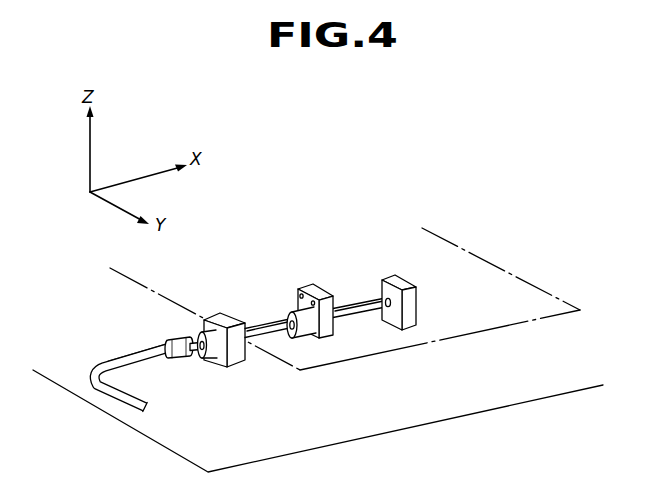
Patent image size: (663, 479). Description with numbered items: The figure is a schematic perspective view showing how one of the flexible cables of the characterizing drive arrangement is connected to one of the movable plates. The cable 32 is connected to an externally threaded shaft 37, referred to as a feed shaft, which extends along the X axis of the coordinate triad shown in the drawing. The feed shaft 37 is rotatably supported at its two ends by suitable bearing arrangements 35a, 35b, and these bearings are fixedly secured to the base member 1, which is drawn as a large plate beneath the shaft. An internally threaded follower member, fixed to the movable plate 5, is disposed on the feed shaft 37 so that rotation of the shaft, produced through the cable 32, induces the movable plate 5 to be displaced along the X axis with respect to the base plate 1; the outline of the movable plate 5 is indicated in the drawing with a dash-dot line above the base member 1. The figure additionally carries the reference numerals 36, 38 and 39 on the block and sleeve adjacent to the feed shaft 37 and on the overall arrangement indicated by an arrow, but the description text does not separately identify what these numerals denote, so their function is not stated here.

The base member 1 is at (448, 402).
The movable plate 5 is at (515, 317).
The flexible cable 32 is at (88, 378).
The bearing arrangement 35a is at (220, 365).
The bearing arrangement 35b is at (413, 310).
The support block 36 is at (286, 303).
The feed shaft 37 is at (268, 340).
The sleeve bushing 38 is at (303, 337).
The shaft assembly 39 is at (355, 268).